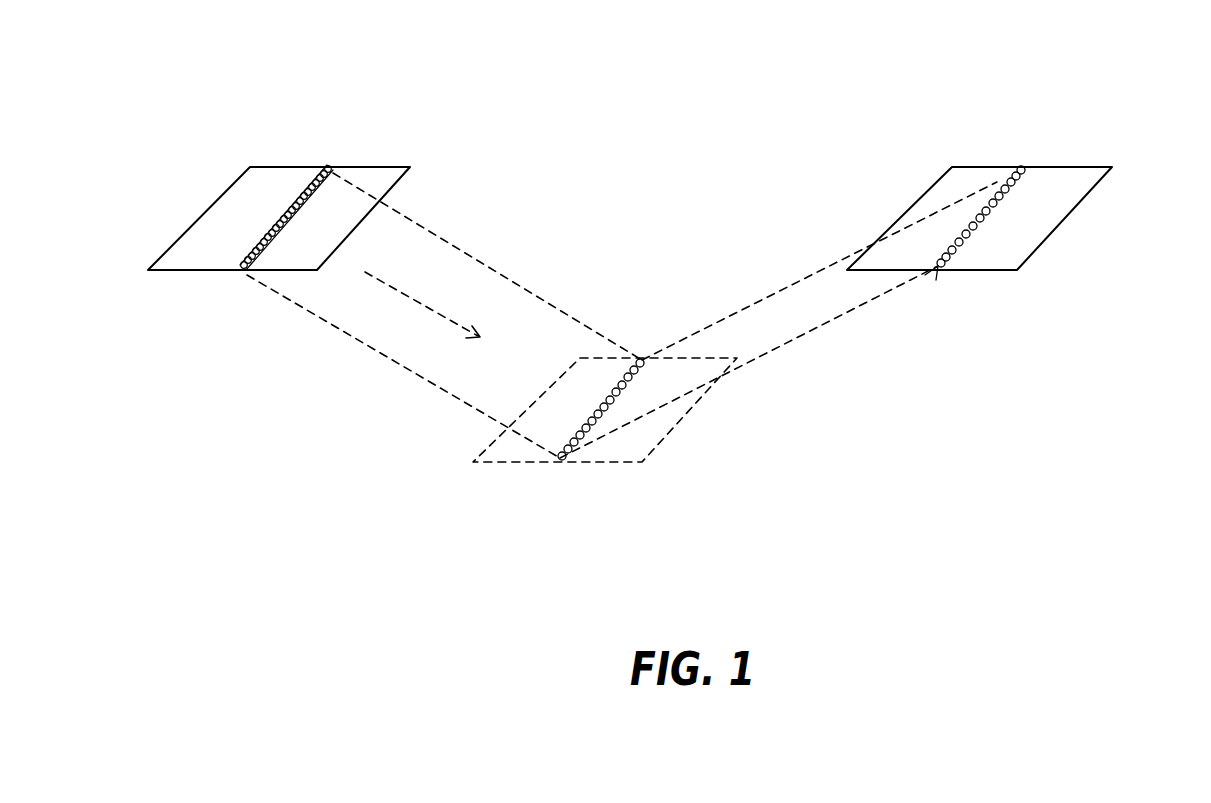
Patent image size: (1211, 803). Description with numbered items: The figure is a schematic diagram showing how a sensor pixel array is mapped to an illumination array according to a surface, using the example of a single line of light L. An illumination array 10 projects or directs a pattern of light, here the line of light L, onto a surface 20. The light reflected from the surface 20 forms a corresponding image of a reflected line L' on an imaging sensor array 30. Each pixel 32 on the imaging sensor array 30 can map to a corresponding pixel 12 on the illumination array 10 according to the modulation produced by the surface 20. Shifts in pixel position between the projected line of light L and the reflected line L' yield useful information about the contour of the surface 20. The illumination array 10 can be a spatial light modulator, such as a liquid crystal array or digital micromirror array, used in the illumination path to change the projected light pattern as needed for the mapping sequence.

The illumination array 10 is at (407, 167).
The pixel 12 is at (305, 190).
The line of light L is at (204, 322).
The surface 20 is at (660, 440).
The imaging sensor array 30 is at (1089, 192).
The pixel 32 is at (997, 183).
The reflected line L' is at (960, 333).